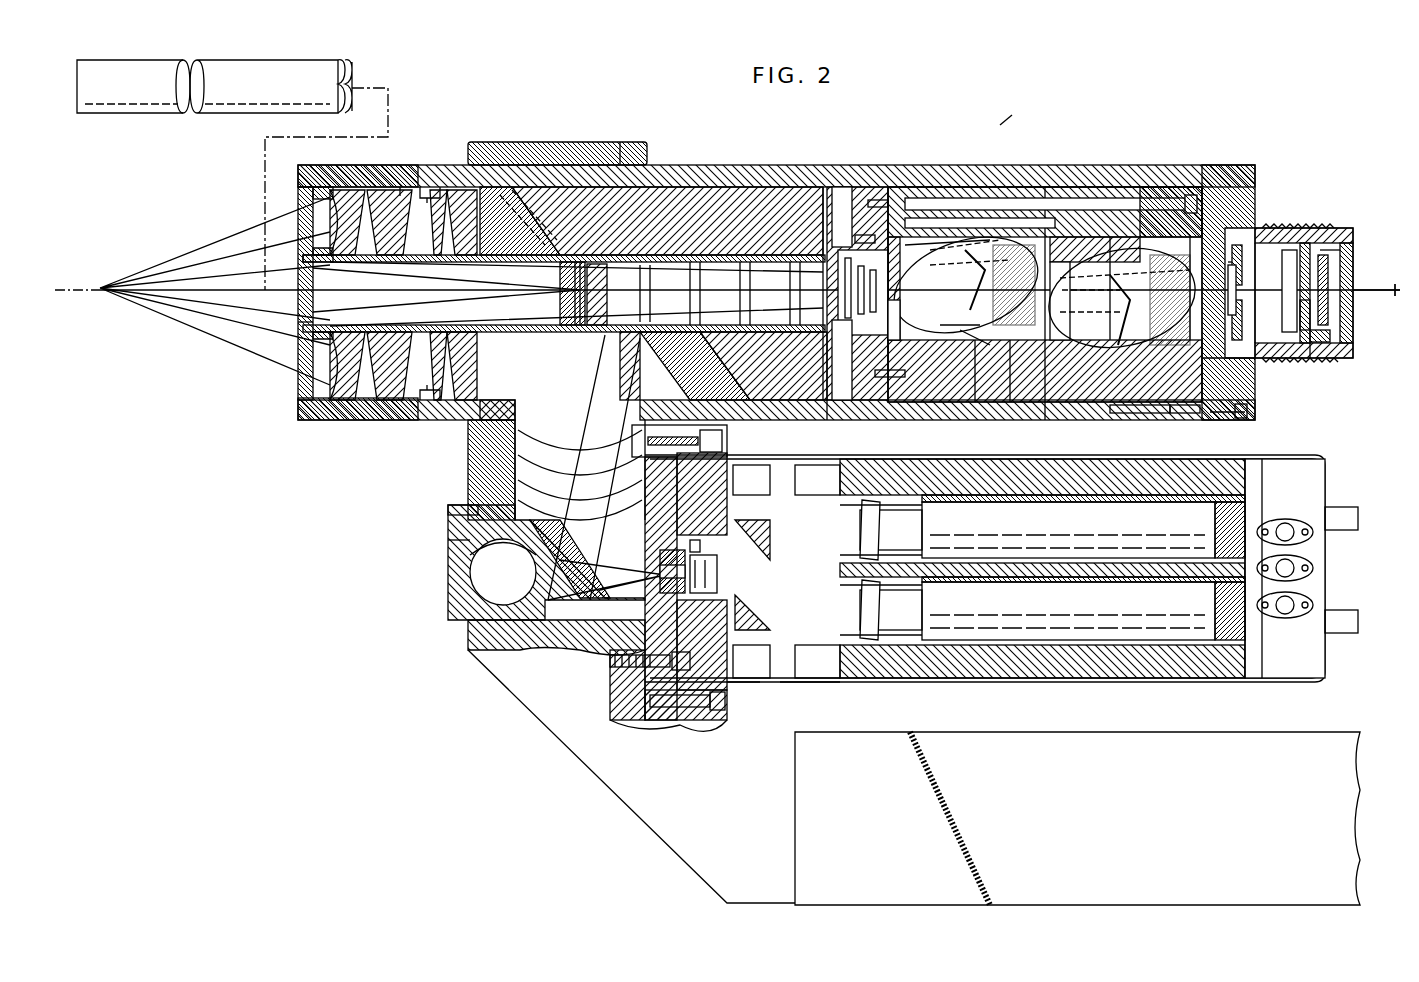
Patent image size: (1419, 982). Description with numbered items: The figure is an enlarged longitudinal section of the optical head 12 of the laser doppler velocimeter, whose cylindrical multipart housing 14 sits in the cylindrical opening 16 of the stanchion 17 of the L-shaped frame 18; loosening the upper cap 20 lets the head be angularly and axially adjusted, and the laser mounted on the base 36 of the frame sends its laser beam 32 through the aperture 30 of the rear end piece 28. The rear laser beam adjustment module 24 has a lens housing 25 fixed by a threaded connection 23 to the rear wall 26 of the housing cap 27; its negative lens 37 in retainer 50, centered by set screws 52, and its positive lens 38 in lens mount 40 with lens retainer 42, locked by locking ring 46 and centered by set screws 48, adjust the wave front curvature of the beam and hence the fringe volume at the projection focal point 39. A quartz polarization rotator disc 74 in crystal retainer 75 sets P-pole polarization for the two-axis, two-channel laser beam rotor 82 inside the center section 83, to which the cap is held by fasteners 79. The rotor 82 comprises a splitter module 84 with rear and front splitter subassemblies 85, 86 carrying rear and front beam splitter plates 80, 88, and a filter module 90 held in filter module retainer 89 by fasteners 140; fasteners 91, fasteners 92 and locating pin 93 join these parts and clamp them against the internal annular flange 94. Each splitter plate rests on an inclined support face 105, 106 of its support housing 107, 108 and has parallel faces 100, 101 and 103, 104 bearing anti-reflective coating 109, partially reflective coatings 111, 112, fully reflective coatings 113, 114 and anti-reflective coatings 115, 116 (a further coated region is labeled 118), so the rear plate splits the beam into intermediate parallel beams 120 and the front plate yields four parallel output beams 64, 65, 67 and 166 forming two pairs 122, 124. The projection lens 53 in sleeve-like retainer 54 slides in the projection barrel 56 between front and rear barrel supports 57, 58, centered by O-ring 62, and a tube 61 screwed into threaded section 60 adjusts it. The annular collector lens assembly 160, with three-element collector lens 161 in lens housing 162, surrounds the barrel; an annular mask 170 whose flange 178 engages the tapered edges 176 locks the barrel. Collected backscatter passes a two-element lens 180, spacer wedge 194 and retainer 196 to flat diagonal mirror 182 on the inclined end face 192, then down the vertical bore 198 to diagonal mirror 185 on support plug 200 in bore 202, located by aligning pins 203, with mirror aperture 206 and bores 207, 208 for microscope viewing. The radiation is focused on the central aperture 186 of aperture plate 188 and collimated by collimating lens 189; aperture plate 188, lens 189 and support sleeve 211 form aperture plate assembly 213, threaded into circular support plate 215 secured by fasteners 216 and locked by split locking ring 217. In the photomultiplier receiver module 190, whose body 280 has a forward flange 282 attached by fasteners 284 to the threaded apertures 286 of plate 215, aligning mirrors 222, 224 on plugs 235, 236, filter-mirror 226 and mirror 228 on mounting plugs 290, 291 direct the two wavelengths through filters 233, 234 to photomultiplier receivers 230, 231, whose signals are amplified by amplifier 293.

The optical head 12 is at (987, 128).
The housing 14 is at (1004, 158).
The cylindrical opening 16 is at (620, 142).
The stanchion 17 is at (470, 438).
The frame 18 is at (1340, 253).
The upper cap 20 is at (590, 142).
The threaded connection 23 is at (1255, 380).
The laser beam adjustment module 24 is at (1300, 223).
The lens housing 25 is at (1270, 228).
The rear wall 26 is at (1255, 408).
The housing cap 27 is at (1215, 165).
The rear end piece 28 is at (1350, 245).
The aperture 30 is at (1355, 284).
The laser beam 32 is at (1395, 296).
The base 36 is at (1283, 830).
The negative lens 37 is at (1240, 275).
The positive lens 38 is at (1330, 305).
The projection focal point 39 is at (107, 306).
The lens mount 40 is at (1305, 243).
The lens retainer 42 is at (1300, 315).
The locking ring 46 is at (1330, 338).
The set screws 48 is at (1312, 358).
The retainer 50 is at (1250, 310).
The set screws 52 is at (1242, 255).
The projection lens 53 is at (612, 280).
The lens retainer 54 is at (610, 312).
The projection barrel 56 is at (298, 320).
The front barrel support 57 is at (345, 262).
The rear barrel support 58 is at (682, 187).
The threaded section 60 is at (565, 284).
The tube 61 is at (252, 93).
The O-ring 62 is at (672, 262).
The output beam 64 is at (775, 272).
The output beam 65 is at (778, 306).
The output beam 67 is at (788, 305).
The polarization rotator disc 74 is at (1240, 284).
The crystal retainer 75 is at (1191, 293).
The fasteners 79 is at (1242, 418).
The rear beam splitter plate 80 is at (1118, 237).
The laser beam rotor 82 is at (850, 405).
The center section 83 is at (790, 187).
The splitter module 84 is at (1050, 405).
The rear splitter subassembly 85 is at (1195, 413).
The front splitter subassembly 86 is at (1018, 395).
The front beam splitter plate 88 is at (935, 237).
The filter module retainer 89 is at (862, 266).
The filter module 90 is at (858, 410).
The fasteners 91 is at (975, 210).
The fasteners 92 is at (1088, 198).
The locating pin 93 is at (905, 377).
The internal annular flange 94 is at (878, 200).
The first face 100 is at (1150, 413).
The second face 101 is at (1061, 298).
The first face 103 is at (966, 284).
The second face 104 is at (904, 318).
The inclined support face 105 is at (1095, 245).
The inclined support face 106 is at (980, 335).
The support housing 107 is at (1165, 187).
The support housing 108 is at (990, 402).
The anti-reflective coating 109 is at (1193, 280).
The partially reflective coating 111 is at (1128, 275).
The partially reflective coating 112 is at (970, 317).
The fully reflective coating 113 is at (1135, 333).
The fully reflective coating 114 is at (995, 282).
The anti-reflective coating 115 is at (1085, 328).
The anti-reflective coating 116 is at (930, 282).
The prism face 118 is at (1025, 280).
The intermediate parallel beams 120 is at (1091, 291).
The beam pair 122 is at (692, 305).
The beam pair 124 is at (690, 292).
The fasteners 140 is at (840, 260).
The collector lens assembly 160 is at (312, 428).
The collector lens 161 is at (420, 187).
The lens housing 162 is at (352, 175).
The lens spacer 166 is at (785, 292).
The annular mask 170 is at (330, 350).
The tapered edges 176 is at (313, 252).
The inner annular flange 178 is at (313, 336).
The two-element lens 180 is at (420, 400).
The flat diagonal mirror 182 is at (500, 187).
The flat diagonal mirror 185 is at (570, 560).
The central aperture 186 is at (660, 585).
The aperture plate 188 is at (660, 565).
The collimating lens 189 is at (739, 616).
The photomultiplier receiver module 190 is at (1135, 682).
The inclined front end face 192 is at (530, 187).
The spacer wedge 194 is at (500, 395).
The retainer 196 is at (428, 187).
The vertical bore 198 is at (468, 455).
The support plug 200 is at (450, 525).
The bore 202 is at (448, 610).
The aligning pins 203 is at (450, 505).
The central aperture 206 is at (503, 572).
The transverse bore 207 is at (447, 550).
The bore 208 is at (503, 553).
The support sleeve 211 is at (716, 539).
The aperture plate assembly 213 is at (702, 645).
The circular support plate 215 is at (672, 662).
The fasteners 216 is at (608, 660).
The split locking ring 217 is at (686, 586).
The aligning mirror 222 is at (755, 535).
The aligning mirror 224 is at (751, 661).
The filter-mirror 226 is at (817, 661).
The flat mirror 228 is at (817, 480).
The photomultiplier tube receiver 230 is at (1110, 602).
The photomultiplier tube receiver 231 is at (1110, 525).
The filter 233 is at (905, 612).
The filter 234 is at (905, 530).
The cylindrical plug 235 is at (751, 480).
The cylindrical plug 236 is at (740, 682).
The body 280 is at (1210, 675).
The forward flange 282 is at (718, 710).
The fasteners 284 is at (727, 445).
The threaded apertures 286 is at (640, 442).
The mounting plug 290 is at (805, 682).
The mounting plug 291 is at (822, 405).
The amplifier 293 is at (1333, 578).